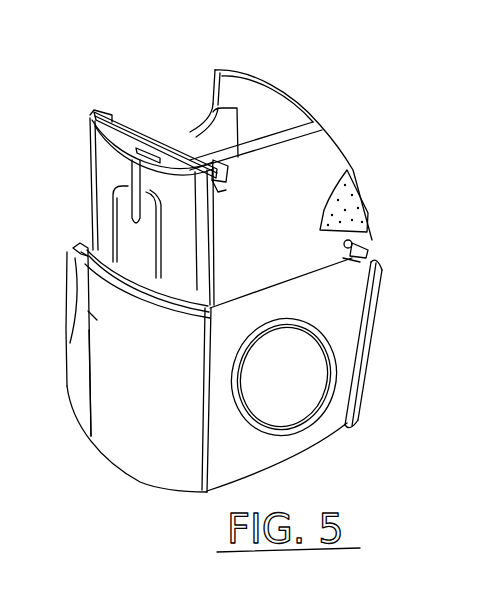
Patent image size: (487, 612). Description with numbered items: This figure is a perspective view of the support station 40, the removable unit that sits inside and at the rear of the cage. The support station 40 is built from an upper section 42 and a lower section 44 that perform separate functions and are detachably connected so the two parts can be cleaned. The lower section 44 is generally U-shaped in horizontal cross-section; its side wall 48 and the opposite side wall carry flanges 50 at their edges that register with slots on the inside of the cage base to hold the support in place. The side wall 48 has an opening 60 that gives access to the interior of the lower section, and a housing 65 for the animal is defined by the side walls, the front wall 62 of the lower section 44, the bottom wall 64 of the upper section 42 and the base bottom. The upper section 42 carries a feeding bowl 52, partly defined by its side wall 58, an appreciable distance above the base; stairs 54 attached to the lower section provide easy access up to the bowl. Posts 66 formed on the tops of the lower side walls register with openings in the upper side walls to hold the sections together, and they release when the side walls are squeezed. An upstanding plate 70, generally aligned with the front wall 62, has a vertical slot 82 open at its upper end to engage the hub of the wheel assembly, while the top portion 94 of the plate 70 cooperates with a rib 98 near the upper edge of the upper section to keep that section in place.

The support station 40 is at (375, 148).
The upper section 42 is at (320, 100).
The lower section 44 is at (139, 457).
The side wall 48 is at (313, 447).
The flanges 50 is at (374, 350).
The feeding bowl 52 is at (257, 130).
The stairs 54 is at (64, 312).
The side wall 58 is at (322, 193).
The opening 60 is at (330, 343).
The front wall 62 is at (122, 420).
The bottom wall 64 is at (348, 260).
The housing 65 is at (295, 383).
The posts 66 is at (345, 253).
The upstanding plate 70 is at (106, 178).
The vertical slot 82 is at (131, 167).
The top portion 94 is at (198, 188).
The rib 98 is at (195, 163).